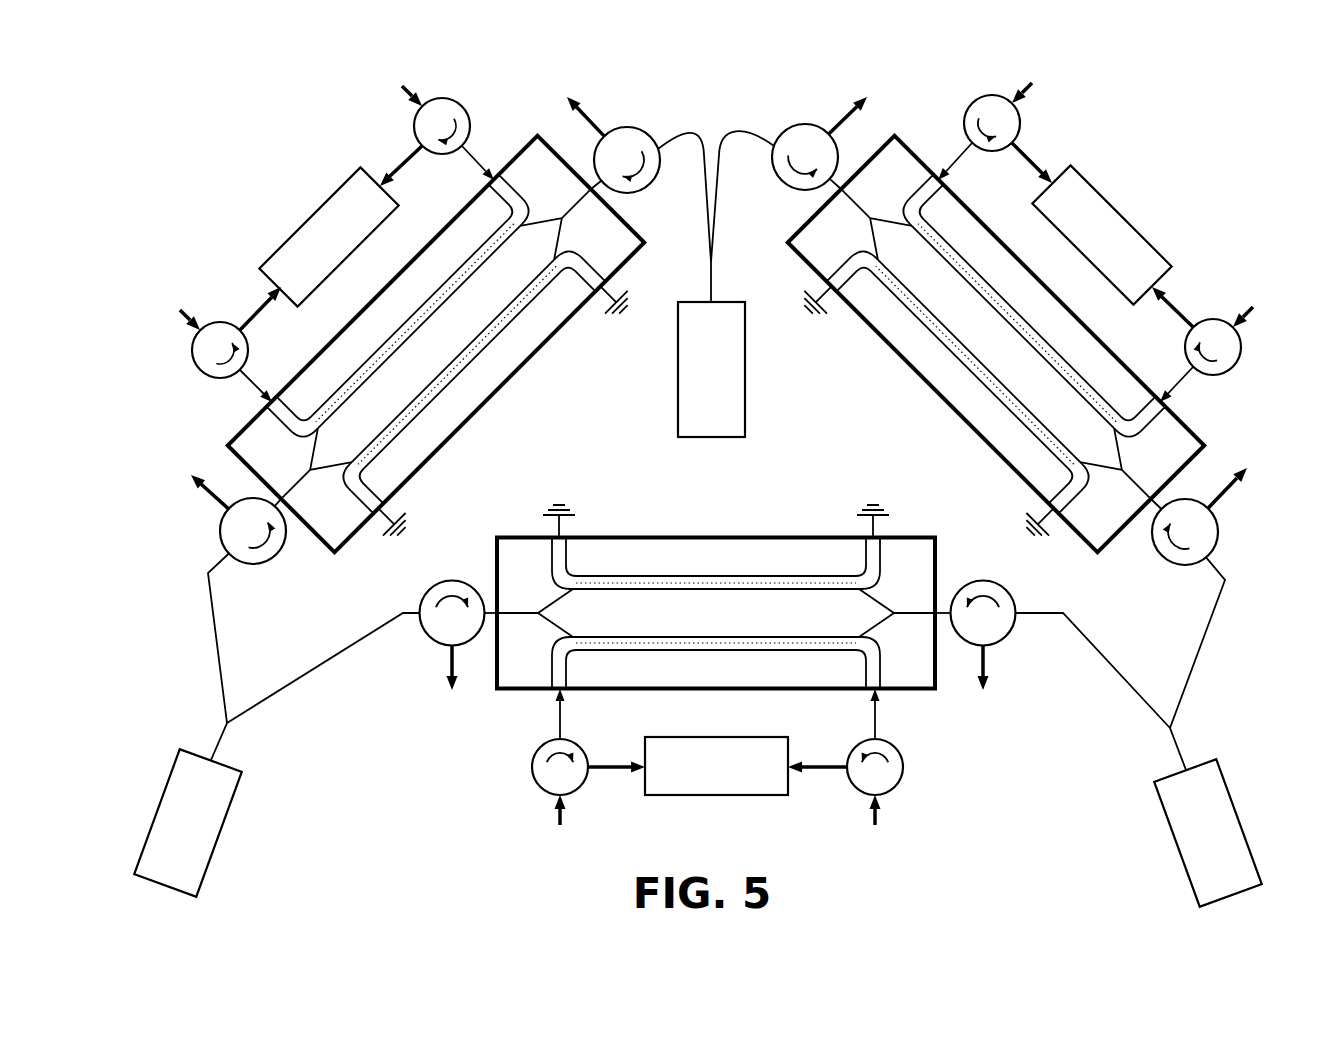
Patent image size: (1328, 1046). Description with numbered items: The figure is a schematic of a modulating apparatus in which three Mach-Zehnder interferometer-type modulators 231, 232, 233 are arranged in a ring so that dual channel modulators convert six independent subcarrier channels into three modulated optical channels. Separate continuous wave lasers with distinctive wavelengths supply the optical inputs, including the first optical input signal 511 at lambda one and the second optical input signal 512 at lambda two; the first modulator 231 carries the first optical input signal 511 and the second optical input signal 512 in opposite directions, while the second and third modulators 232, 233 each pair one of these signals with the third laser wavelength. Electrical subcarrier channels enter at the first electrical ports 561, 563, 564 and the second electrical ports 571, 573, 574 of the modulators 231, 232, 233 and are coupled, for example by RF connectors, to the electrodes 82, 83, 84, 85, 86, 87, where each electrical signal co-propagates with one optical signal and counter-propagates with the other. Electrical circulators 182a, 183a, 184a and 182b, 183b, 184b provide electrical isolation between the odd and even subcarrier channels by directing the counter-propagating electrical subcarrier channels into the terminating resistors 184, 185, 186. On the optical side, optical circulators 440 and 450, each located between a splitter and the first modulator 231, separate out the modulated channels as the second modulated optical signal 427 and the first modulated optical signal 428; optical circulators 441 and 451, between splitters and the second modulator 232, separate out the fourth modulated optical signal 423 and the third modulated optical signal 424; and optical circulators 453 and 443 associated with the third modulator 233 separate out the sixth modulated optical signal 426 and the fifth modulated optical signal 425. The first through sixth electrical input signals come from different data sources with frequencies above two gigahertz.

The first modulator 231 is at (716, 597).
The second modulator 232 is at (984, 355).
The third modulator 233 is at (447, 355).
The electrode 82 is at (565, 722).
The electrode 83 is at (872, 722).
The electrode 84 is at (960, 157).
The RF input electrode 85 is at (1183, 375).
The electrode 86 is at (258, 383).
The electrode 87 is at (472, 160).
The electrical circulator 182a is at (528, 767).
The electrical circulator 182b is at (907, 767).
The electrical circulator 183a is at (969, 101).
The electrical circulator 183b is at (1233, 372).
The electrical circulator 184a is at (194, 372).
The electrical circulator 184b is at (463, 106).
The terminating resistor 184 is at (717, 781).
The terminating resistor 185 is at (1102, 235).
The terminating resistor 186 is at (331, 238).
The first electrical port 561 is at (560, 825).
The second electrical port 571 is at (875, 825).
The first electrical port 563 is at (1038, 75).
The second electrical port 573 is at (1259, 300).
The first electrical port 564 is at (394, 79).
The second electrical port 574 is at (173, 303).
The optical circulator 440 is at (459, 598).
The optical circulator 450 is at (975, 595).
The fifth modulated optical signal 425 is at (266, 545).
The optical circulator 451 is at (1172, 544).
The optical circulator 453 is at (637, 172).
The optical circulator 441 is at (793, 169).
The sixth modulated optical signal 426 is at (566, 94).
The fourth modulated optical signal 423 is at (866, 95).
The second modulated optical signal 427 is at (448, 681).
The first modulated optical signal 428 is at (983, 681).
The optical circulator 443 is at (190, 473).
The third modulated optical signal 424 is at (1249, 468).
The first optical input signal 511 is at (271, 725).
The second optical input signal 512 is at (965, 519).